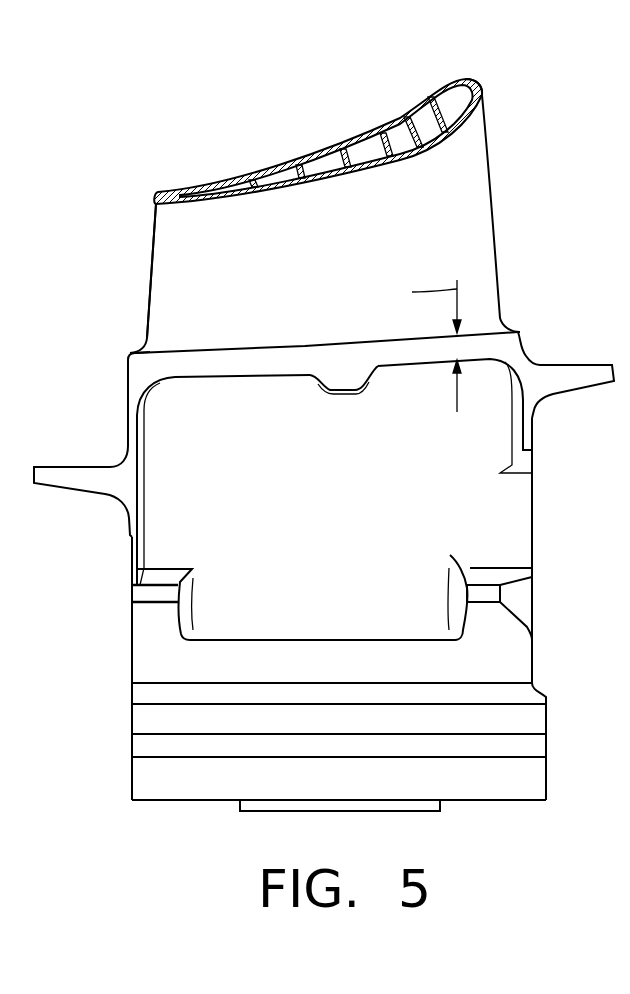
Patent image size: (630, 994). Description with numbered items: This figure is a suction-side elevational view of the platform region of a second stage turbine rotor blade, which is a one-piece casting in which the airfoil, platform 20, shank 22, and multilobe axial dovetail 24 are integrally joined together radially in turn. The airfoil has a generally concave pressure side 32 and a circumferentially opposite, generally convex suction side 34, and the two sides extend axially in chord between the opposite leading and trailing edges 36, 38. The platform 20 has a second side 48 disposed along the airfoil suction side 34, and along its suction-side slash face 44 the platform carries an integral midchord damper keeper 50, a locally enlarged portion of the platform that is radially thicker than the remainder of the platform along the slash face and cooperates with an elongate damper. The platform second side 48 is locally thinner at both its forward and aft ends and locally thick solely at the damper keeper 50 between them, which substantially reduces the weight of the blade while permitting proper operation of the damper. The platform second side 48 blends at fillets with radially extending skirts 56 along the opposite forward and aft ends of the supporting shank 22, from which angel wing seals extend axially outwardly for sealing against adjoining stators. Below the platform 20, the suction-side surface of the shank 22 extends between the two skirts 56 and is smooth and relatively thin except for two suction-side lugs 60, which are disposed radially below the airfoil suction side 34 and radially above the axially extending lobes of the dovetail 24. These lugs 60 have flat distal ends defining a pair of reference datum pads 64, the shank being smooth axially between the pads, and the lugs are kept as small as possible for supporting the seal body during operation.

The platform 20 is at (126, 342).
The shank 22 is at (244, 494).
The multilobe axial dovetail 24 is at (131, 748).
The pressure side 32 is at (338, 150).
The suction side 34 is at (326, 283).
The leading edge 36 is at (458, 76).
The trailing edge 38 is at (152, 245).
The suction-side slash face 44 is at (236, 367).
The platform second side 48 is at (420, 365).
The midchord damper keeper 50 is at (346, 386).
The skirts 56 is at (128, 450).
The suction-side lugs 60 is at (193, 592).
The reference datum pads 64 is at (153, 595).